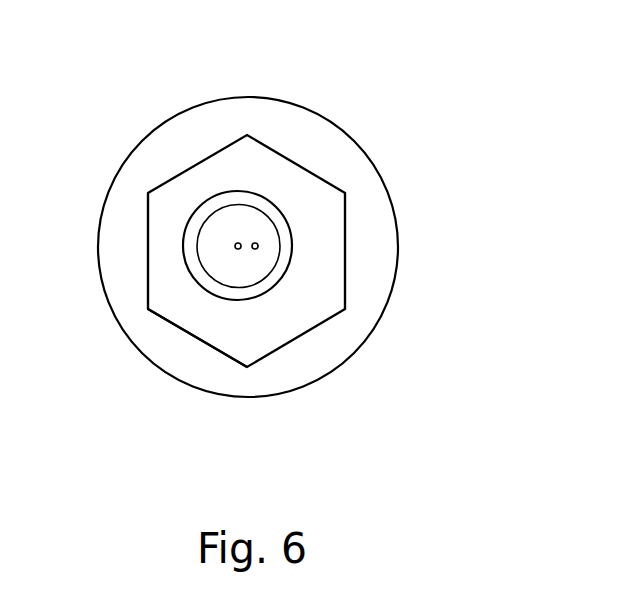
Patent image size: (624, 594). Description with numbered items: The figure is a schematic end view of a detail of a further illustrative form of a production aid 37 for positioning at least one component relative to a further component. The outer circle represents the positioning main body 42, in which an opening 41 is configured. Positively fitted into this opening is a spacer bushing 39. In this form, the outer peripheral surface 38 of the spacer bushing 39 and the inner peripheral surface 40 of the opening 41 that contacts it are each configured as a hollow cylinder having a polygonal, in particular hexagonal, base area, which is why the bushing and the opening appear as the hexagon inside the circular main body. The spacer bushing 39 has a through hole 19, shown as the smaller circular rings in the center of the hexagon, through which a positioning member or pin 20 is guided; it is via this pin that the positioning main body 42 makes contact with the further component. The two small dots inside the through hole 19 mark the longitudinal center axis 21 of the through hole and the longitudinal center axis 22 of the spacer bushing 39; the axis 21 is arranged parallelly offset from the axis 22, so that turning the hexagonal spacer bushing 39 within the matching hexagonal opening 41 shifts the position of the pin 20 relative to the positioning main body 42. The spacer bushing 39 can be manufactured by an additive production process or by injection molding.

The production aid 37 is at (408, 165).
The positioning main body 42 is at (340, 125).
The spacer bushing 39 is at (163, 275).
The outer peripheral surface 38 is at (147, 233).
The inner peripheral surface 40 is at (165, 315).
The opening 41 is at (347, 222).
The through hole 19 is at (268, 287).
The positioning member or pin 20 is at (237, 275).
The longitudinal center axis of the through hole 21 is at (238, 242).
The longitudinal center axis of the spacer bushing 22 is at (258, 246).